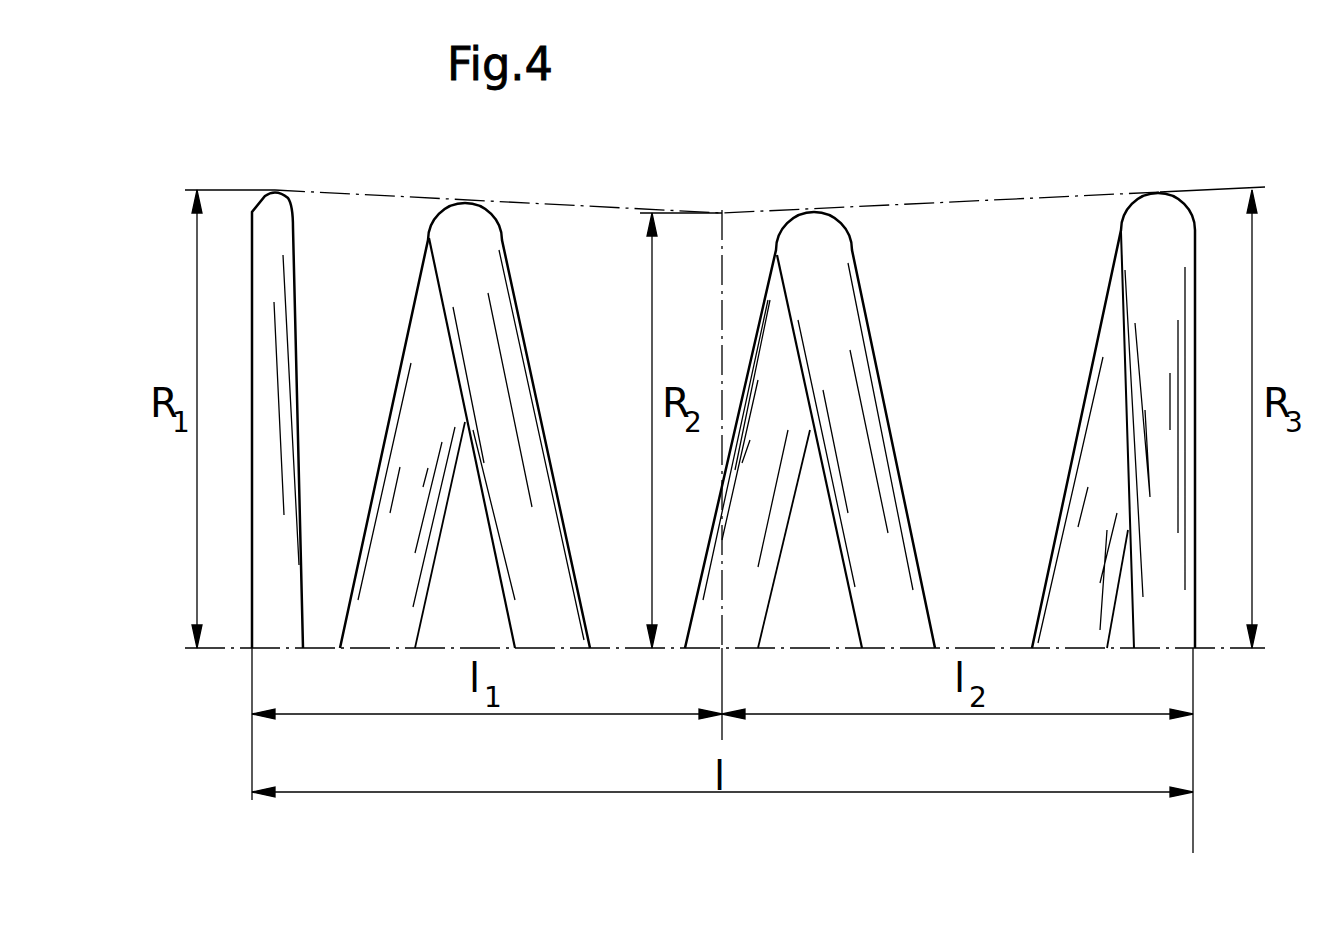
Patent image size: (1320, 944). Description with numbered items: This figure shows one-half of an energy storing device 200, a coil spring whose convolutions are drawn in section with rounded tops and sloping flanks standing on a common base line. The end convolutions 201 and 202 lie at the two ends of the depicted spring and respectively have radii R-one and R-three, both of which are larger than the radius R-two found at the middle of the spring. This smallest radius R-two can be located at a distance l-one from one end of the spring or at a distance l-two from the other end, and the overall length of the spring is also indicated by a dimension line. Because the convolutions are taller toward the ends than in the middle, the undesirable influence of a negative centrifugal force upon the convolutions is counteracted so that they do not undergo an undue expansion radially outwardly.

The energy storing device 200 is at (781, 168).
The end convolution 201 is at (275, 217).
The end convolution 202 is at (1160, 217).